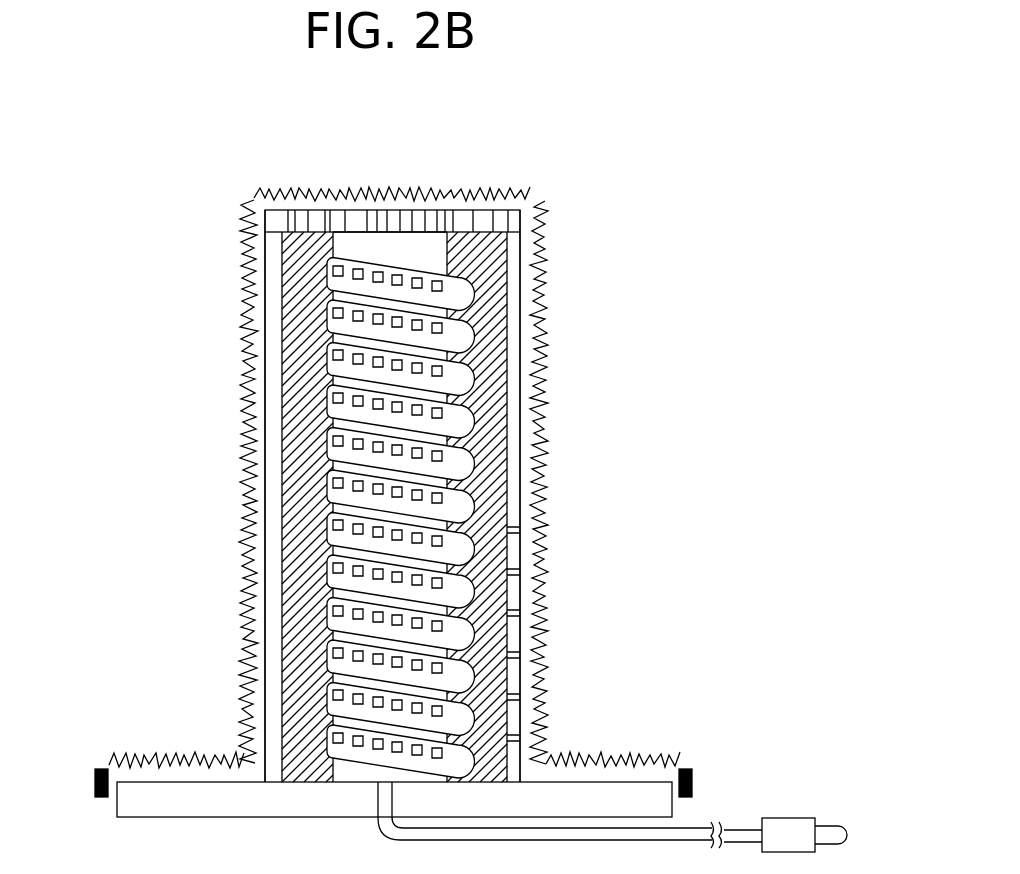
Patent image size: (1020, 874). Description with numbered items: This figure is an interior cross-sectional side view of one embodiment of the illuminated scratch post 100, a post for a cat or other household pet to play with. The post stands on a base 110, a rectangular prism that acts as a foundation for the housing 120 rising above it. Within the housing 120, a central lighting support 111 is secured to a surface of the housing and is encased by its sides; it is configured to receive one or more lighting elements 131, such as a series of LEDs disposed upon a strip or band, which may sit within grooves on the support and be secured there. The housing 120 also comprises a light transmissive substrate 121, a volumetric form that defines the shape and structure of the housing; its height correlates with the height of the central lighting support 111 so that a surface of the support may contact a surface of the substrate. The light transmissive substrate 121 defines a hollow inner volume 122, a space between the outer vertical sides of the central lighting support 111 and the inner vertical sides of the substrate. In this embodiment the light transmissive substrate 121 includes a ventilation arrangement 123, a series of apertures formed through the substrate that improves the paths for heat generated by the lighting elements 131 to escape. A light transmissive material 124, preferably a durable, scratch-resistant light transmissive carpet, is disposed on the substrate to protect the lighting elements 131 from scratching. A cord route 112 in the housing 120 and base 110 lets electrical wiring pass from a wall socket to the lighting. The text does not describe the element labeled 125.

The illuminated scratch post 100 is at (98, 117).
The base 110 is at (191, 798).
The central lighting support 111 is at (356, 241).
The cord route 112 is at (397, 798).
The housing 120 is at (578, 428).
The light transmissive substrate 121 is at (273, 462).
The hollow inner volume 122 is at (304, 552).
The ventilation arrangement 123 is at (504, 220).
The light transmissive material 124 is at (244, 630).
The side channel 125 is at (511, 657).
The lighting elements 131 is at (328, 352).